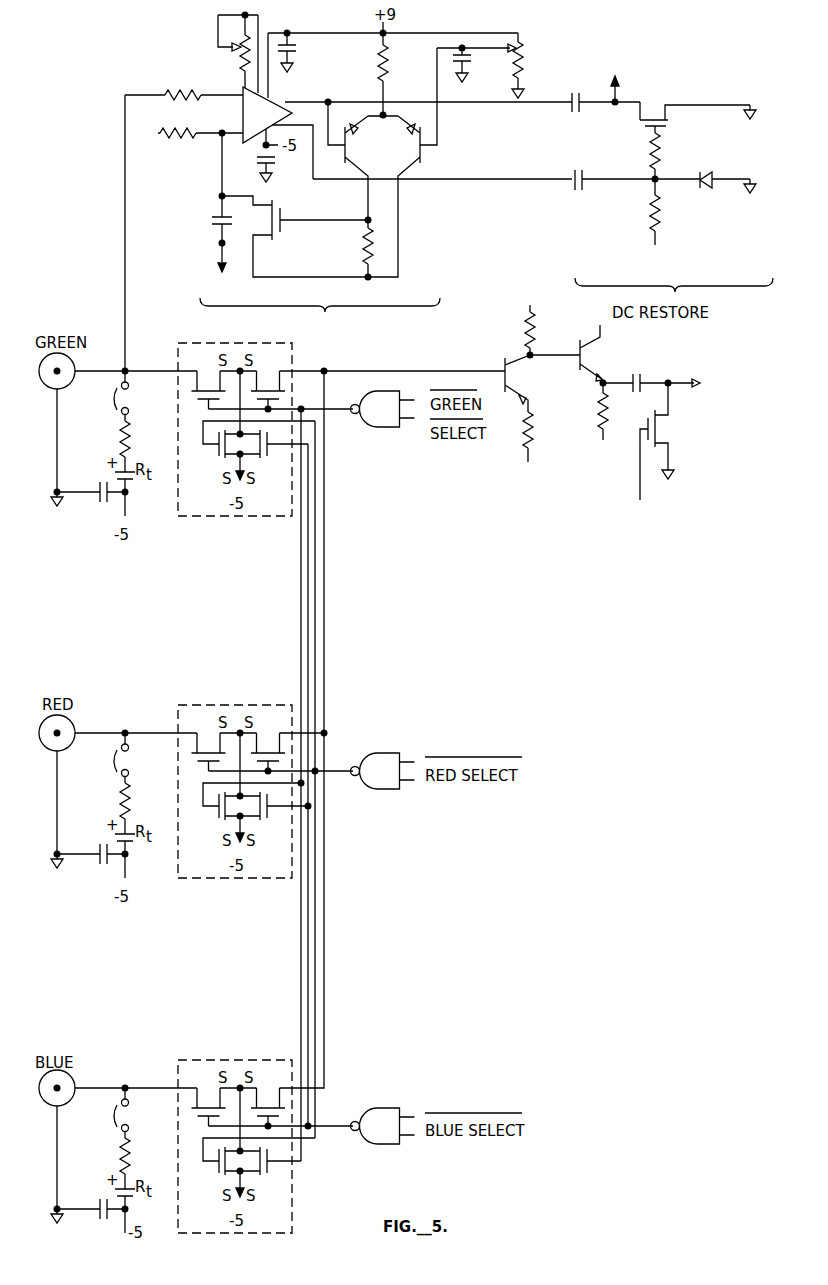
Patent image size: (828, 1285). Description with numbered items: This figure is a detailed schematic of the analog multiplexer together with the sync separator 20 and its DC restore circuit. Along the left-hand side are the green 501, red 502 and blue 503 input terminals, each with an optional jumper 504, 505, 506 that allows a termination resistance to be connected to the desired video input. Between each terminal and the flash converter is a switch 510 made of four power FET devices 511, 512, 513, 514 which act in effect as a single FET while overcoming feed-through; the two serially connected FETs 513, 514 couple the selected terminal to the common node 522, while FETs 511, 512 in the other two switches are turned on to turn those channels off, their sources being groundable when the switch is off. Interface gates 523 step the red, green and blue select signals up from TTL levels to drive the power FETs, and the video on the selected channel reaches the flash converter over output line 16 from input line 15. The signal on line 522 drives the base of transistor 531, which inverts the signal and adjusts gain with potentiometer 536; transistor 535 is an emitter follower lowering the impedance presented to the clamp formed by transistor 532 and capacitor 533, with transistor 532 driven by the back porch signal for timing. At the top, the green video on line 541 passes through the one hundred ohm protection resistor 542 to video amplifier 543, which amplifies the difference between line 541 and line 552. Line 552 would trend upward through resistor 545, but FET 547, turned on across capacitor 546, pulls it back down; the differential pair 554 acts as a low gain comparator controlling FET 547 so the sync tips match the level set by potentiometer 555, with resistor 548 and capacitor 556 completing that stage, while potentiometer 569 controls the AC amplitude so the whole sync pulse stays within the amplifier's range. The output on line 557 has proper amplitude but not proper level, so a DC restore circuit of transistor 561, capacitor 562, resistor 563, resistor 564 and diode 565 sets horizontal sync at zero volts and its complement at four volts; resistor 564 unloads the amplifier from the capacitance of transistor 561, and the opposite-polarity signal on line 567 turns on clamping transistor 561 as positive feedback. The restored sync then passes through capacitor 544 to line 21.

The video signal line 15 is at (425, 370).
The output line to flash converter 16 is at (668, 378).
The sync separator 20 is at (320, 318).
The line 21 is at (648, 66).
The green input terminal 501 is at (73, 368).
The red input terminal 502 is at (73, 730).
The blue input terminal 503 is at (73, 1085).
The jumper 504 is at (130, 402).
The jumper 505 is at (130, 764).
The jumper 506 is at (130, 1119).
The switch 510 is at (292, 362).
The power FET device 511 is at (262, 1179).
The power FET device 512 is at (215, 1178).
The power FET device 513 is at (261, 1091).
The power FET device 514 is at (206, 1092).
The line 522 is at (327, 370).
The TTL to high level interface gate 523 is at (370, 430).
The transistor 531 is at (505, 366).
The transistor 532 is at (674, 430).
The capacitor 533 is at (634, 358).
The transistor 535 is at (586, 373).
The potentiometer 536 is at (520, 323).
The line 541 is at (138, 92).
The protection resistor 542 is at (180, 89).
The video amplifier 543 is at (272, 101).
The capacitor 544 is at (578, 98).
The resistor 545 is at (176, 125).
The capacitor 546 is at (208, 225).
The FET 547 is at (283, 235).
The resistor 548 is at (360, 261).
The line 552 is at (211, 131).
The differential pair 554 is at (433, 160).
The potentiometer 555 is at (526, 50).
The capacitor 556 is at (471, 64).
The line 557 is at (321, 102).
The transistor 561 is at (657, 111).
The capacitor 562 is at (586, 177).
The resistor 563 is at (662, 226).
The resistor 564 is at (662, 148).
The diode 565 is at (724, 171).
The line 567 is at (508, 179).
The potentiometer 569 is at (269, 30).